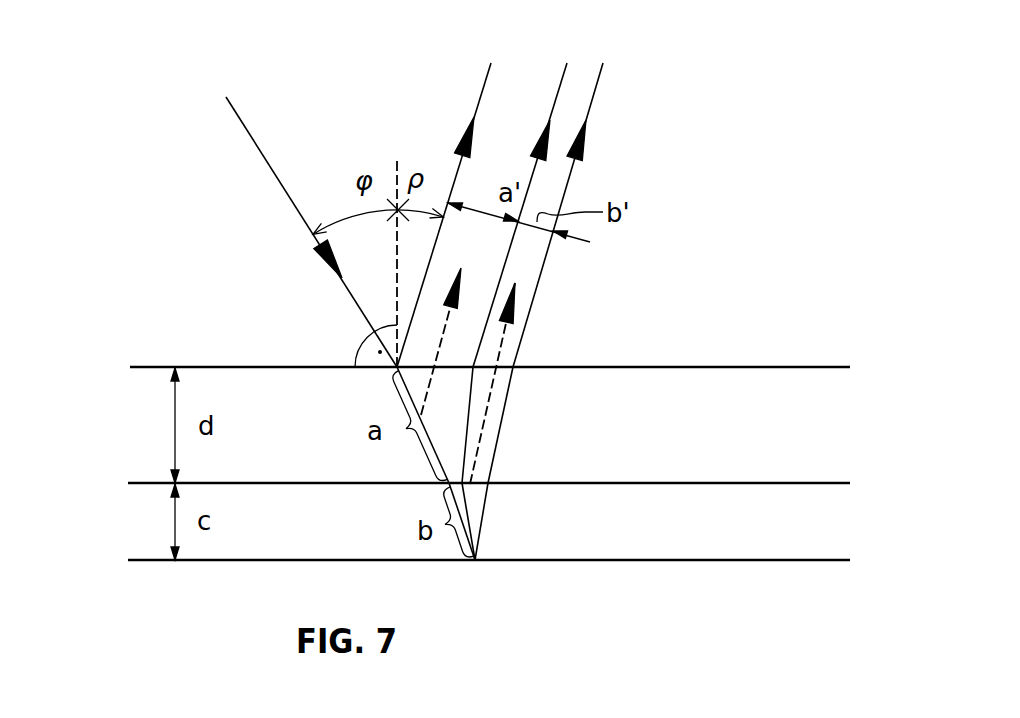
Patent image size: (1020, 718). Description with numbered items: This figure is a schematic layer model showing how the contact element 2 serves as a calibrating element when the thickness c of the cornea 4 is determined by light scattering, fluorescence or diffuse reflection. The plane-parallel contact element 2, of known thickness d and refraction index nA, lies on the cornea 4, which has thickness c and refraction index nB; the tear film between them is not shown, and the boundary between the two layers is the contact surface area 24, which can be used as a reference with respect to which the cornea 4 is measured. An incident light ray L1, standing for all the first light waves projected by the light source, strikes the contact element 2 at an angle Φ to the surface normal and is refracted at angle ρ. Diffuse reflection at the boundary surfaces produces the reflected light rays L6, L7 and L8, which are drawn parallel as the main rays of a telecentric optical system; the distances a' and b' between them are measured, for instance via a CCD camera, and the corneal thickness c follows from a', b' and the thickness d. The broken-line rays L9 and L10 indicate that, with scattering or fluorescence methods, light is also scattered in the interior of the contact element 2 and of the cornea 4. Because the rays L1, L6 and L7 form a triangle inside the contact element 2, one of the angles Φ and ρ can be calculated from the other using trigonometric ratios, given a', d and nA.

The contact element 2 is at (813, 427).
The cornea 4 is at (817, 527).
The contact surface area 24 is at (136, 494).
The incident light ray L1 is at (248, 131).
The reflected light ray (third light waves) L6 is at (483, 88).
The reflected light ray (second light waves) L7 is at (560, 83).
The reflected light ray (second light waves) L8 is at (599, 78).
The scattered light ray L9 is at (443, 333).
The scattered light ray L10 is at (498, 356).